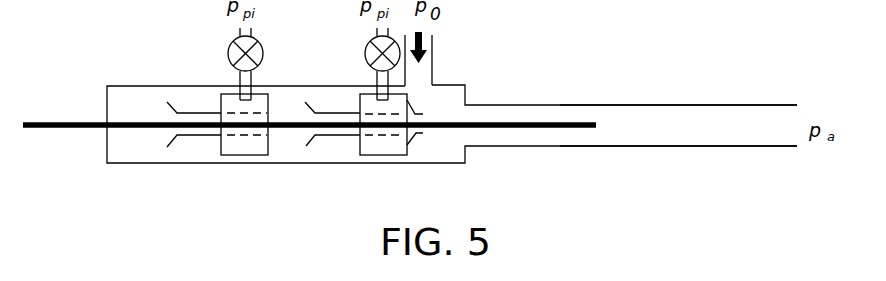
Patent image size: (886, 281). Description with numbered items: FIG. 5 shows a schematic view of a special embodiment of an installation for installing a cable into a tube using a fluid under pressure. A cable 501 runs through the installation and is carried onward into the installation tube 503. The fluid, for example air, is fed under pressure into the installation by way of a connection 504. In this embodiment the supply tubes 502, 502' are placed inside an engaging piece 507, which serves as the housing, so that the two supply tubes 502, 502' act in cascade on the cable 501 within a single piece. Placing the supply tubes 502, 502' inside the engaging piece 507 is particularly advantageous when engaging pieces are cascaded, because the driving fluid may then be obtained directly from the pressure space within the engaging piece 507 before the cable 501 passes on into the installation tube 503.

The cable 501 is at (65, 128).
The supply tube 502 is at (215, 148).
The supply tube 502' is at (363, 148).
The installation tube 503 is at (595, 147).
The connection 504 is at (453, 59).
The engaging piece 507 is at (455, 163).